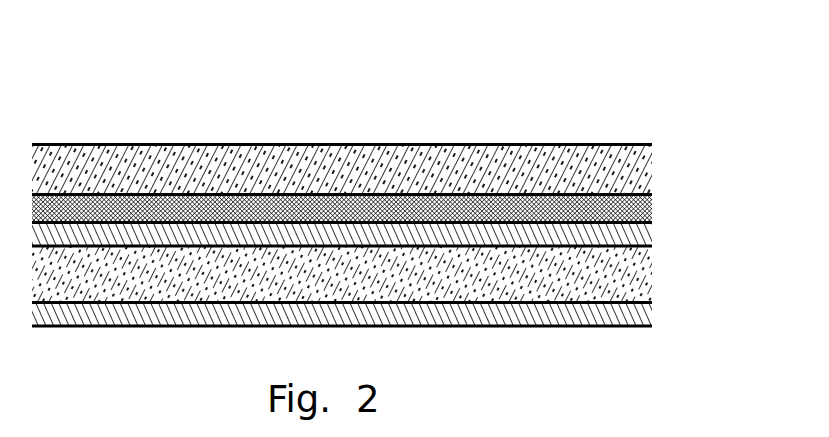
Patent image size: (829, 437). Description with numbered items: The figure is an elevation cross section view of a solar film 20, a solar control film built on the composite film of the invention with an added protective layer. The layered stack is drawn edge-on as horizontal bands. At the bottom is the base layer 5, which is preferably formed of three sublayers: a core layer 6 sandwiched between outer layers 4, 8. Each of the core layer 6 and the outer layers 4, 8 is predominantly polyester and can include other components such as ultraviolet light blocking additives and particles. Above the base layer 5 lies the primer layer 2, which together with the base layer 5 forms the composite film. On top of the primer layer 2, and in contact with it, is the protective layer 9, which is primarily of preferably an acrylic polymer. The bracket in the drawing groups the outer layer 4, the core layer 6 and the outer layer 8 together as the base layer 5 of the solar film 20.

The solar film 20 is at (546, 120).
The protective layer 9 is at (652, 169).
The primer layer 2 is at (652, 208).
The outer layer 4 is at (651, 234).
The core layer 6 is at (651, 278).
The outer layer 8 is at (360, 318).
The base layer 5 is at (400, 277).